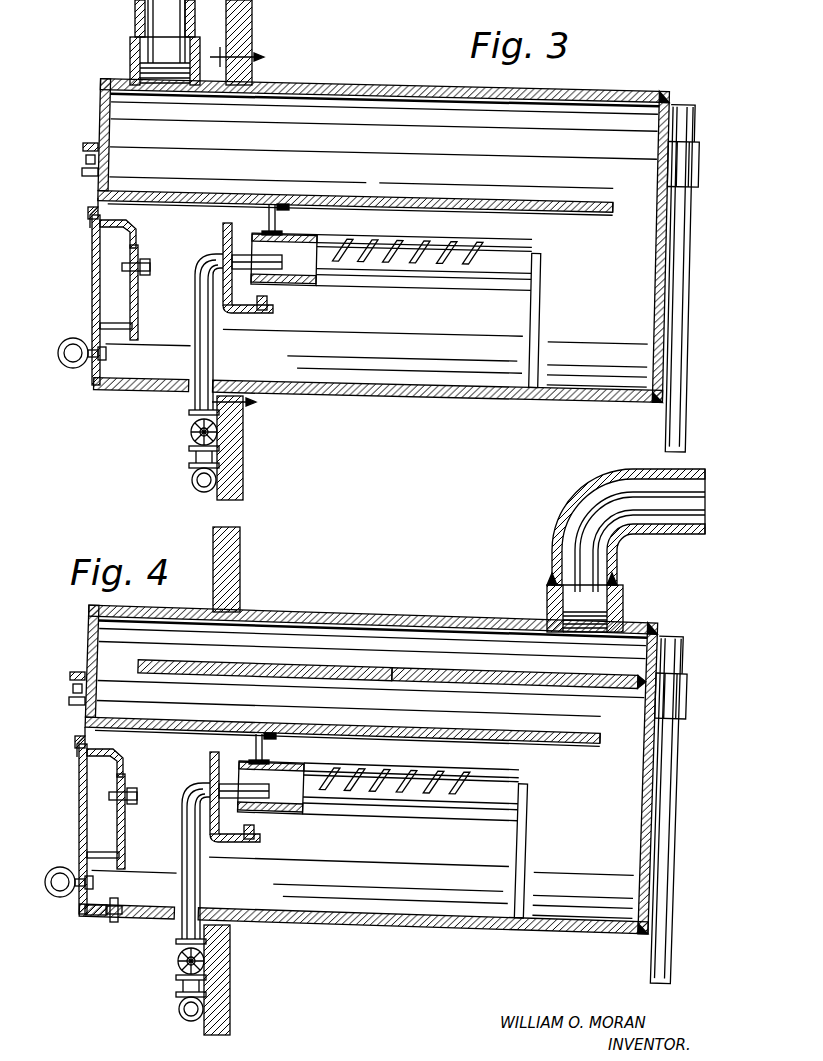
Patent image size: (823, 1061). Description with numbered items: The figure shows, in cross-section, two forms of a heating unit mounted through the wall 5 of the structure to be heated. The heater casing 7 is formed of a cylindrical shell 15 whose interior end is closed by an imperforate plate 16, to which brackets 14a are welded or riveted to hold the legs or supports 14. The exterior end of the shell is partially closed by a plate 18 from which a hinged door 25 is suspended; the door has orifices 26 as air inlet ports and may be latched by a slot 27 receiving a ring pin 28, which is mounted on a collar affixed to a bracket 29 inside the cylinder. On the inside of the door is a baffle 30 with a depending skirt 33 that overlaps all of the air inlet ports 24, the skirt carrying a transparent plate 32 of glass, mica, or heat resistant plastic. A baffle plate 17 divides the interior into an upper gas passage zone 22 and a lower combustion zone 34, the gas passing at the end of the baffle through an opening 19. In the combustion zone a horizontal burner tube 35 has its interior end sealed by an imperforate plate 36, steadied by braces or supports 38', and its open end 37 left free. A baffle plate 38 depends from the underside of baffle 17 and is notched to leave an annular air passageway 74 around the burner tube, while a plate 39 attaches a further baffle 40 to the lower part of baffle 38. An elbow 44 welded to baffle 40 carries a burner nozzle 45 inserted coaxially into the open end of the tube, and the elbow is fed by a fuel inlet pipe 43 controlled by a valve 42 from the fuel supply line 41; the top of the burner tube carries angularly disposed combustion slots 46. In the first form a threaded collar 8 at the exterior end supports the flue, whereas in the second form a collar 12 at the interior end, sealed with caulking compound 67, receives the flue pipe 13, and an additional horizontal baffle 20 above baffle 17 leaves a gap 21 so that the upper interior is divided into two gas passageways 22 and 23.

In FIG. 3, the wall 5 is at (243, 468).
In FIG. 4, the wall 5 is at (241, 545).
In FIG. 3, the heater casing 7 is at (441, 86).
In FIG. 4, the heater casing 7 is at (373, 602).
In FIG. 3, the collar 8 is at (132, 62).
In FIG. 4, the collar 12 is at (623, 606).
In FIG. 4, the flue pipe 13 is at (578, 494).
In FIG. 3, the legs or supports 14 is at (688, 302).
In FIG. 4, the legs or supports 14 is at (686, 811).
In FIG. 3, the brackets 14a is at (697, 158).
In FIG. 4, the brackets 14a is at (696, 696).
In FIG. 3, the cylindrical shell 15 is at (598, 88).
In FIG. 4, the cylindrical shell 15 is at (368, 765).
In FIG. 3, the imperforate plate 16 is at (675, 100).
In FIG. 4, the imperforate plate 16 is at (686, 647).
In FIG. 3, the baffle plate 17 is at (462, 199).
In FIG. 4, the baffle plate 17 is at (343, 711).
In FIG. 3, the plate 18 is at (97, 117).
In FIG. 4, the plate 18 is at (69, 661).
In FIG. 3, the opening past partition 19 is at (630, 212).
In FIG. 4, the opening past partition 19 is at (603, 746).
In FIG. 4, the horizontal baffle 20 is at (519, 668).
In FIG. 4, the gap 21 is at (260, 655).
In FIG. 3, the gas passage zone 22 is at (255, 115).
In FIG. 4, the gas passage zone 22 is at (371, 693).
In FIG. 4, the gas passageway 23 is at (372, 640).
In FIG. 3, the air inlet ports 24 is at (82, 162).
In FIG. 4, the air inlet ports 24 is at (57, 688).
In FIG. 3, the door 25 is at (88, 195).
In FIG. 4, the door 25 is at (52, 748).
In FIG. 3, the orifices 26 is at (92, 255).
In FIG. 4, the orifices 26 is at (66, 829).
In FIG. 4, the slot 27 is at (84, 914).
In FIG. 3, the ring pin 28 is at (68, 368).
In FIG. 4, the ring pin 28 is at (55, 894).
In FIG. 4, the bracket 29 is at (106, 922).
In FIG. 3, the baffle 30 is at (120, 222).
In FIG. 4, the baffle 30 is at (121, 756).
In FIG. 3, the transparent plate 32 is at (146, 270).
In FIG. 4, the transparent plate 32 is at (142, 788).
In FIG. 3, the skirt 33 is at (138, 311).
In FIG. 4, the skirt 33 is at (126, 821).
In FIG. 3, the combustion zone 34 is at (430, 375).
In FIG. 4, the combustion zone 34 is at (361, 907).
In FIG. 3, the burner tube 35 is at (408, 288).
In FIG. 4, the burner tube 35 is at (410, 820).
In FIG. 3, the imperforate plate 36 is at (532, 243).
In FIG. 4, the imperforate plate 36 is at (403, 791).
In FIG. 3, the open end 37 is at (268, 230).
In FIG. 4, the open end 37 is at (253, 746).
In FIG. 3, the baffle plate 38 is at (299, 215).
In FIG. 4, the baffle plate 38 is at (290, 743).
In FIG. 3, the braces or supports 38' is at (562, 320).
In FIG. 4, the braces or supports 38' is at (550, 852).
In FIG. 3, the plate 39 is at (263, 316).
In FIG. 4, the plate 39 is at (258, 844).
In FIG. 3, the baffle plate 40 is at (223, 235).
In FIG. 4, the baffle plate 40 is at (199, 784).
In FIG. 3, the fuel supply line 41 is at (192, 484).
In FIG. 4, the fuel supply line 41 is at (171, 1026).
In FIG. 3, the valve 42 is at (190, 442).
In FIG. 4, the valve 42 is at (169, 980).
In FIG. 3, the fuel inlet pipe 43 is at (195, 398).
In FIG. 4, the fuel inlet pipe 43 is at (169, 897).
In FIG. 3, the elbow 44 is at (207, 262).
In FIG. 4, the elbow 44 is at (193, 789).
In FIG. 3, the burner nozzle 45 is at (247, 270).
In FIG. 4, the burner nozzle 45 is at (244, 804).
In FIG. 3, the combustion slots 46 is at (403, 246).
In FIG. 4, the combustion slots 46 is at (426, 770).
In FIG. 4, the caulking compound 67 is at (622, 587).
In FIG. 3, the annular air passageway 74 is at (300, 238).
In FIG. 4, the annular air passageway 74 is at (297, 753).